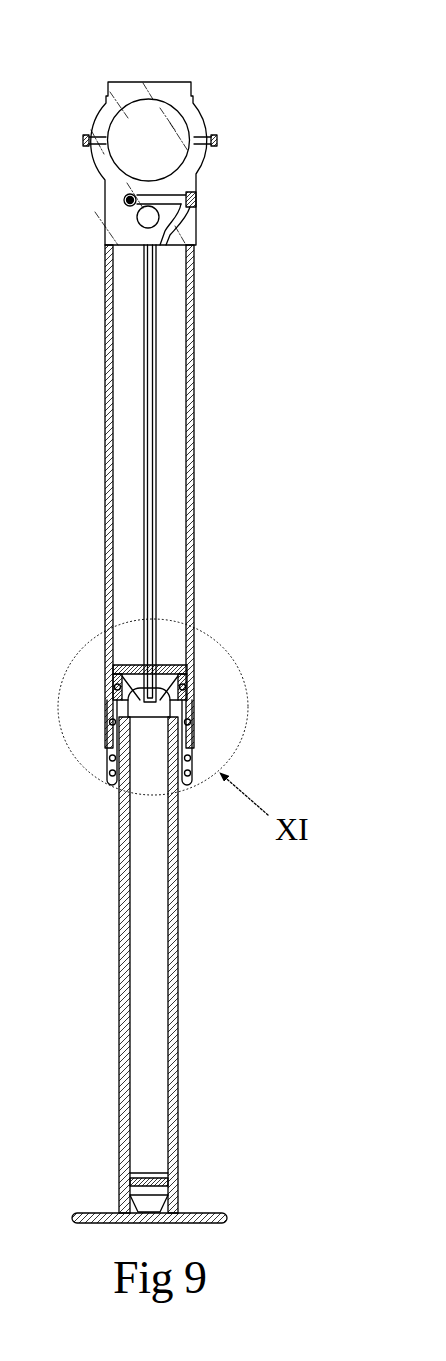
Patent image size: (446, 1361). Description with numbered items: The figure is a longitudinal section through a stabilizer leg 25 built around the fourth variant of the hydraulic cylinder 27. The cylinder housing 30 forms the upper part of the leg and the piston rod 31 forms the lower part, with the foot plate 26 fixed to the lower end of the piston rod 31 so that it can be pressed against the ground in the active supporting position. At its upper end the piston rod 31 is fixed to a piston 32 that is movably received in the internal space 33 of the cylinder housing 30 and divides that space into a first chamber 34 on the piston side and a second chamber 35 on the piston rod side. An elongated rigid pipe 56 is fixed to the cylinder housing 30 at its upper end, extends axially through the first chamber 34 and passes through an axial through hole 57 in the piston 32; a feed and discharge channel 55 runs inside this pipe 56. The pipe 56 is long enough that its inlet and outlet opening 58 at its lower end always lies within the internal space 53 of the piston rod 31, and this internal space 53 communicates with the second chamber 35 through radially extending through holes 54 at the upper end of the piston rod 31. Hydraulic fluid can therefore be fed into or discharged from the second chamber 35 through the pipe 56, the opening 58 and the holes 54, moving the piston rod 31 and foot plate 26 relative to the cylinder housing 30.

The stabilizer leg 25 is at (160, 617).
The hydraulic cylinder 27 is at (207, 287).
The cylinder housing 30 is at (192, 403).
The internal space 33 is at (173, 355).
The first chamber 34 is at (173, 498).
The feed and discharge channel 55 is at (85, 473).
The pipe 56 is at (145, 522).
The axial through hole 57 is at (130, 667).
The piston 32 is at (158, 651).
The inlet and outlet opening 58 is at (149, 705).
The through holes 54 is at (112, 710).
The second chamber 35 is at (187, 710).
The piston rod 31 is at (175, 1000).
The internal space of the piston rod 53 is at (148, 853).
The foot plate 26 is at (93, 1212).